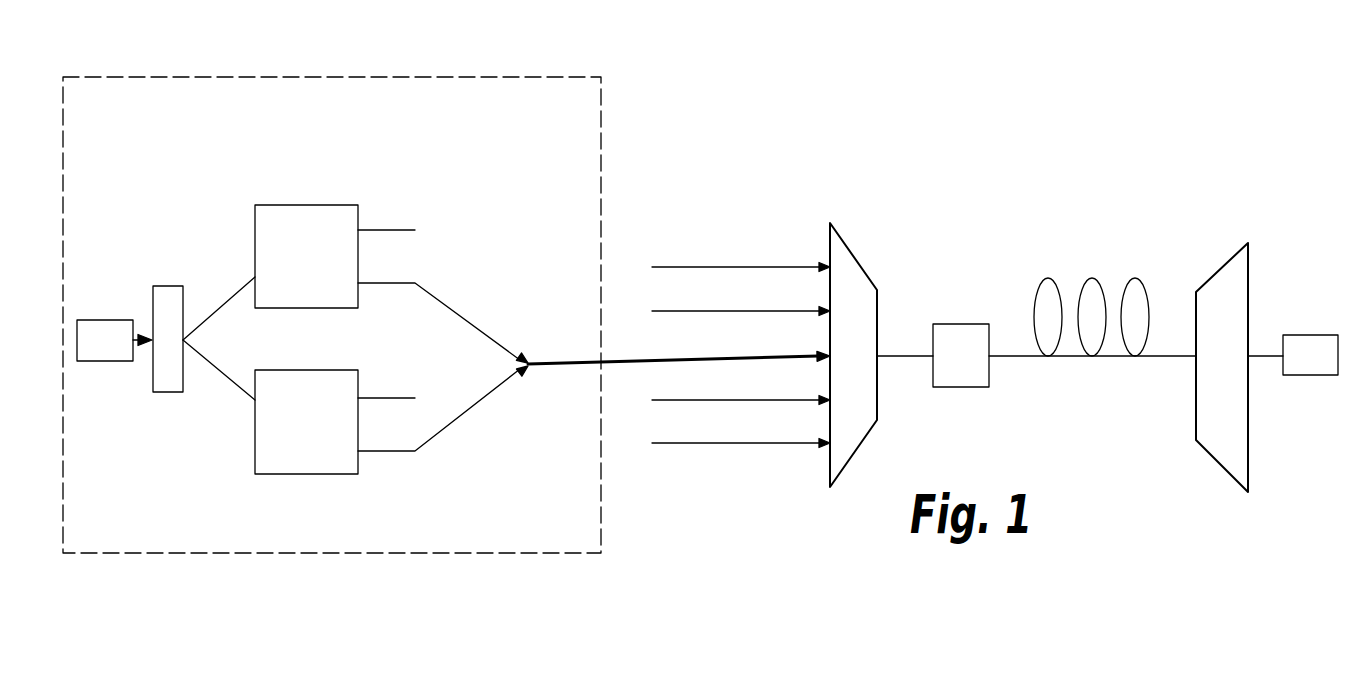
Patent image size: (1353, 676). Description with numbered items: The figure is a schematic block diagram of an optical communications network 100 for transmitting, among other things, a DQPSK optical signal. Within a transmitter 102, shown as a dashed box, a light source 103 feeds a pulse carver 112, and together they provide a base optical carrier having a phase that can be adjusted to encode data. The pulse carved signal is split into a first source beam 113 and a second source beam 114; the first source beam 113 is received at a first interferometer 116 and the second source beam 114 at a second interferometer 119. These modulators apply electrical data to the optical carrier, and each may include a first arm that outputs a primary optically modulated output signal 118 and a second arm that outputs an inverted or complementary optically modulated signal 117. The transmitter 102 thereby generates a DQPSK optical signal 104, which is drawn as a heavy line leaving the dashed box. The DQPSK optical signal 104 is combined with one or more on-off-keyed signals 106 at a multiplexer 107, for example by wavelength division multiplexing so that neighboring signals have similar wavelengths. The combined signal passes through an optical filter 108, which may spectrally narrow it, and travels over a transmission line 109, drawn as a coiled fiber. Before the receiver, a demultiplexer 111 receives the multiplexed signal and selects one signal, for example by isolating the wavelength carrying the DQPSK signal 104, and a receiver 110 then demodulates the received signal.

The optical communications network 100 is at (1018, 110).
The transmitter 102 is at (399, 65).
The light source 103 is at (120, 351).
The DQPSK optical signal 104 is at (788, 355).
The on-off-keyed (OOK) signals 106 is at (700, 305).
The multiplexer 107 is at (873, 273).
The optical filter 108 is at (988, 387).
The transmission line 109 is at (1135, 261).
The receiver 110 is at (1327, 366).
The demultiplexer 111 is at (1222, 262).
The pulse carver 112 is at (170, 393).
The first source beam 113 is at (232, 293).
The second source beam 114 is at (218, 376).
The first interferometer 116 is at (326, 268).
The inverted optically modulated signal 117 is at (390, 225).
The primary optically modulated output signal 118 is at (390, 283).
The second interferometer 119 is at (327, 431).